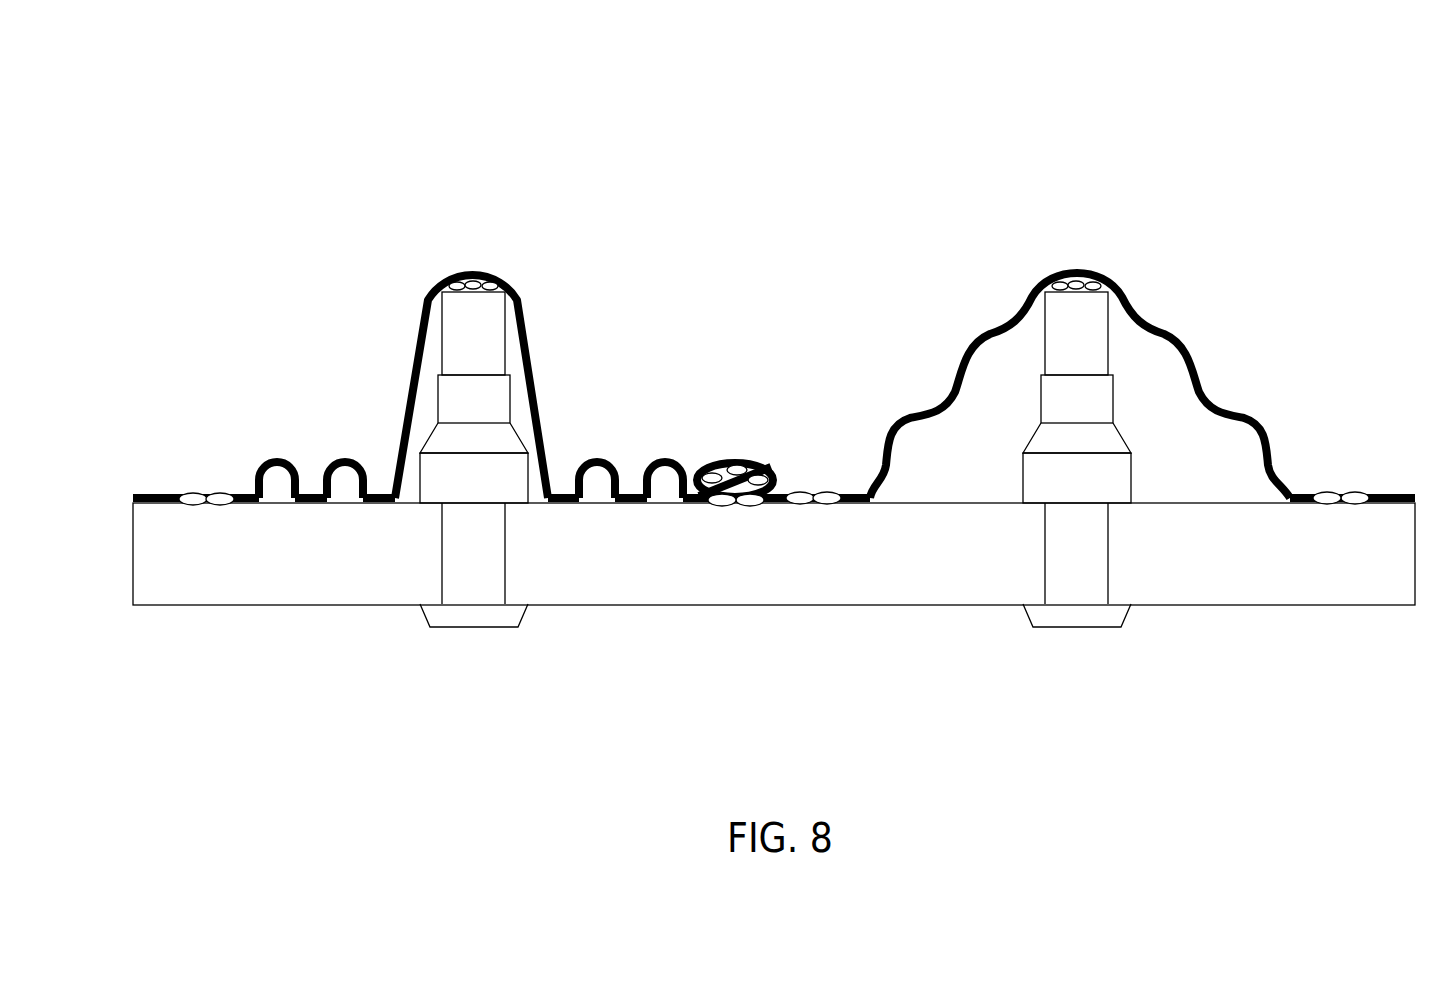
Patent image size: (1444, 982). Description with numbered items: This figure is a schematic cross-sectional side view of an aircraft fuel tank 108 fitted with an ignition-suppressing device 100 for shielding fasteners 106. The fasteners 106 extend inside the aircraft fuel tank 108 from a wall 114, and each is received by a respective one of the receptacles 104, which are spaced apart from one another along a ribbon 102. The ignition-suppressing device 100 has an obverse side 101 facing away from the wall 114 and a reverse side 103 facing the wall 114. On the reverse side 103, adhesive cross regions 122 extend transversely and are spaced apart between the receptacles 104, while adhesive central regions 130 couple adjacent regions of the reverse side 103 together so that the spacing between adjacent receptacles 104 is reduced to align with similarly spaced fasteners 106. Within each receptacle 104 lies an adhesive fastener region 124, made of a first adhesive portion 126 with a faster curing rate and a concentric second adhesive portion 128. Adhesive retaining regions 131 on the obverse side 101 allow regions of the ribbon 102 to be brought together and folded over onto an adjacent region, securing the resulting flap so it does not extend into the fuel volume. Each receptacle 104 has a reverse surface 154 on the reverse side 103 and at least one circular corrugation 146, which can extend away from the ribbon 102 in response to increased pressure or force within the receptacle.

The ignition-suppressing device 100 is at (184, 312).
The obverse side 101 is at (597, 460).
The ribbon 102 is at (190, 373).
The reverse side 103 is at (558, 506).
The receptacles 104 is at (532, 274).
The fasteners 106 is at (507, 332).
The aircraft fuel tank 108 is at (510, 110).
The wall 114 is at (1240, 606).
The adhesive cross regions 122 is at (192, 494).
The adhesive fastener regions 124 is at (446, 286).
The first adhesive portion 126 is at (472, 280).
The second adhesive portion 128 is at (494, 284).
The adhesive central regions 130 is at (221, 494).
The adhesive retaining regions 131 is at (735, 505).
The circular corrugation 146 is at (345, 460).
The reverse surface 154 is at (432, 338).